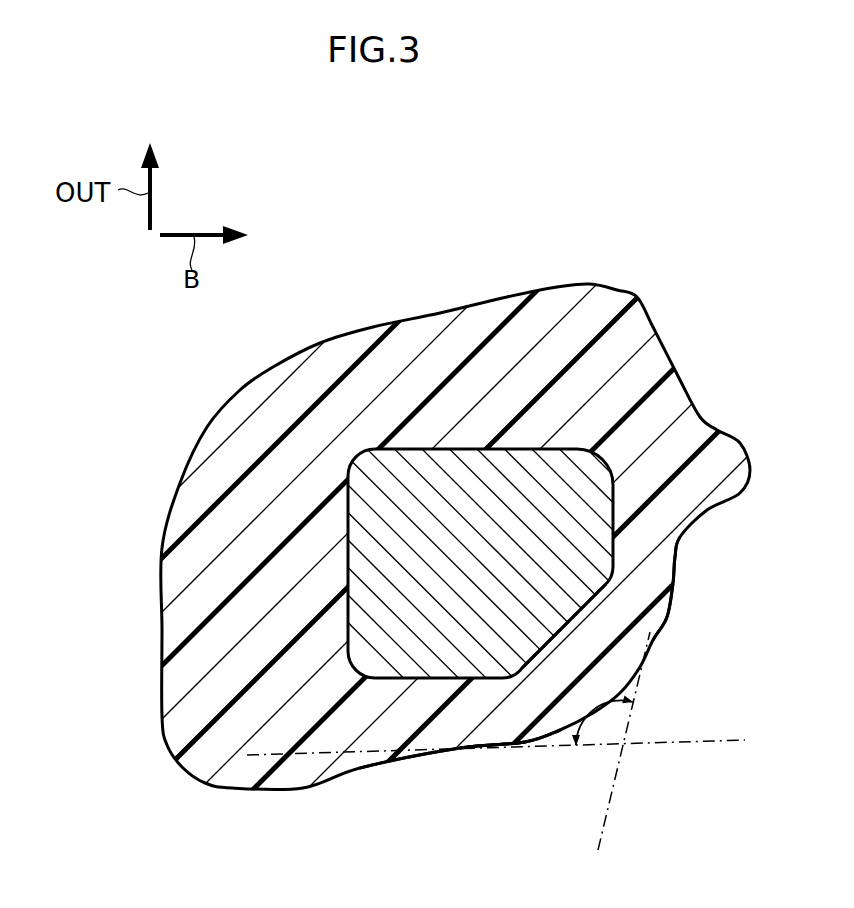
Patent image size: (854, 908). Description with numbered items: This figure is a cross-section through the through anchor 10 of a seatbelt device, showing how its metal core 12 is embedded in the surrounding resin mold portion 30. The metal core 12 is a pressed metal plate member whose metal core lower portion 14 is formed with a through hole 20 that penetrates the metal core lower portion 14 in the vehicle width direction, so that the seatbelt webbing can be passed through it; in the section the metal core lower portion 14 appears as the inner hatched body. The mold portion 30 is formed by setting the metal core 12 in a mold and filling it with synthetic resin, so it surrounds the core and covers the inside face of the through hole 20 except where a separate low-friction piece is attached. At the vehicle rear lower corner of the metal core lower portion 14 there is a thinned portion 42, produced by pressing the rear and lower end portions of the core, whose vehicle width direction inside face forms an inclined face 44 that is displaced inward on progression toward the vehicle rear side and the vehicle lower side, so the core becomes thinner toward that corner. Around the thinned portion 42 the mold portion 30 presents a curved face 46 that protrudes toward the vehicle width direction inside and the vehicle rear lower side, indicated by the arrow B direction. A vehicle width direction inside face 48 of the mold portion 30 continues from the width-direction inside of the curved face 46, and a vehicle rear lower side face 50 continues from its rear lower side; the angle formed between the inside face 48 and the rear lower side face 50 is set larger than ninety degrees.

The through anchor 10 is at (427, 550).
The metal core 12 is at (452, 470).
The metal core lower portion 14 is at (490, 498).
The through hole 20 is at (345, 543).
The mold portion 30 is at (240, 395).
The thinned portion 42 is at (600, 594).
The inclined face 44 is at (525, 748).
The curved face 46 is at (636, 687).
The vehicle width direction inside face 48 is at (466, 752).
The vehicle rear lower side face 50 is at (674, 572).